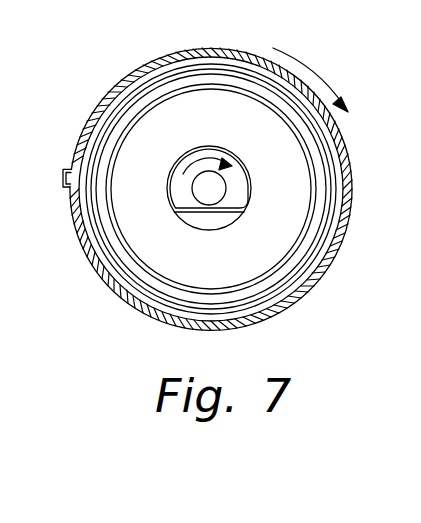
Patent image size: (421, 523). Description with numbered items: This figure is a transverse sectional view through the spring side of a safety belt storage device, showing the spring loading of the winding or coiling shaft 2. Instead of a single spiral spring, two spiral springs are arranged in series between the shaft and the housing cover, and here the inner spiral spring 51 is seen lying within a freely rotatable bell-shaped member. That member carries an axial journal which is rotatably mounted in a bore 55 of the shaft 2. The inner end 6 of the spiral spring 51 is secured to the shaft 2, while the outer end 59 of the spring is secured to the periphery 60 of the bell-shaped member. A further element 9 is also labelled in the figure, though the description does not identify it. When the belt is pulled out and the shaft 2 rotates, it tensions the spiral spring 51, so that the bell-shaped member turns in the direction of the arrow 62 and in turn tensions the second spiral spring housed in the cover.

The arrow 62 is at (304, 44).
The spiral spring 51 is at (244, 91).
The bore 55 is at (219, 183).
The winding or coiling shaft 2 is at (241, 194).
The rotor disc 9 is at (187, 173).
The inner end 6 is at (192, 207).
The periphery 60 is at (338, 242).
The outer end 59 is at (63, 188).